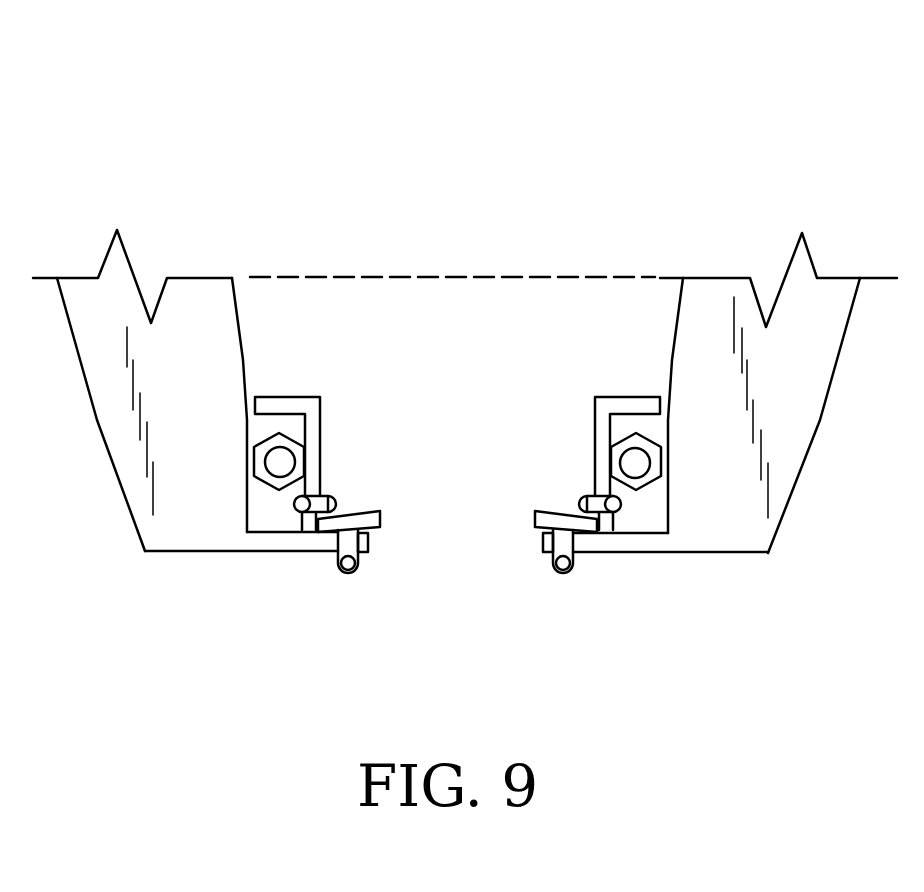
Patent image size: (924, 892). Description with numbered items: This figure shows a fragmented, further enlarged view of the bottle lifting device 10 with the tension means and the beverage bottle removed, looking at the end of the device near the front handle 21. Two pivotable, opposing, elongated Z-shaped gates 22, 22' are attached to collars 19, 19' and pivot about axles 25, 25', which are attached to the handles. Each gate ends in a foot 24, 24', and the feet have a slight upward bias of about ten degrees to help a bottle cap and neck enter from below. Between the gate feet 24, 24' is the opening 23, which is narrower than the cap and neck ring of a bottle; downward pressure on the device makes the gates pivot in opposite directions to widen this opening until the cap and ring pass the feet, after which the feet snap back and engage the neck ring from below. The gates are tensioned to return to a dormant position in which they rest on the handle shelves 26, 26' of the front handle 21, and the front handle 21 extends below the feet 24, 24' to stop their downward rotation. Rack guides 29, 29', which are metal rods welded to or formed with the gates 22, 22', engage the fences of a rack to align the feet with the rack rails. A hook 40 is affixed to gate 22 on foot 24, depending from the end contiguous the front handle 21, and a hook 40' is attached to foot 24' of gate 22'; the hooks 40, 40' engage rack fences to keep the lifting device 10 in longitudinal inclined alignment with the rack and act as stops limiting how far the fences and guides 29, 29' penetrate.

The bottle lifting device 10 is at (820, 100).
The front handle 21 is at (810, 377).
The Z-shaped gate 22 is at (325, 434).
The Z-shaped gate 22' is at (601, 434).
The opening 23 is at (455, 398).
The foot 24 is at (371, 488).
The foot 24' is at (535, 490).
The axle 25 is at (239, 437).
The axle 25' is at (673, 446).
The collar 19 is at (243, 477).
The collar 19' is at (672, 484).
The handle shelf 26 is at (241, 576).
The handle shelf 26' is at (670, 583).
The rack guide 29 is at (331, 475).
The rack guide 29' is at (583, 477).
The hook 40 is at (369, 584).
The hook 40' is at (541, 581).